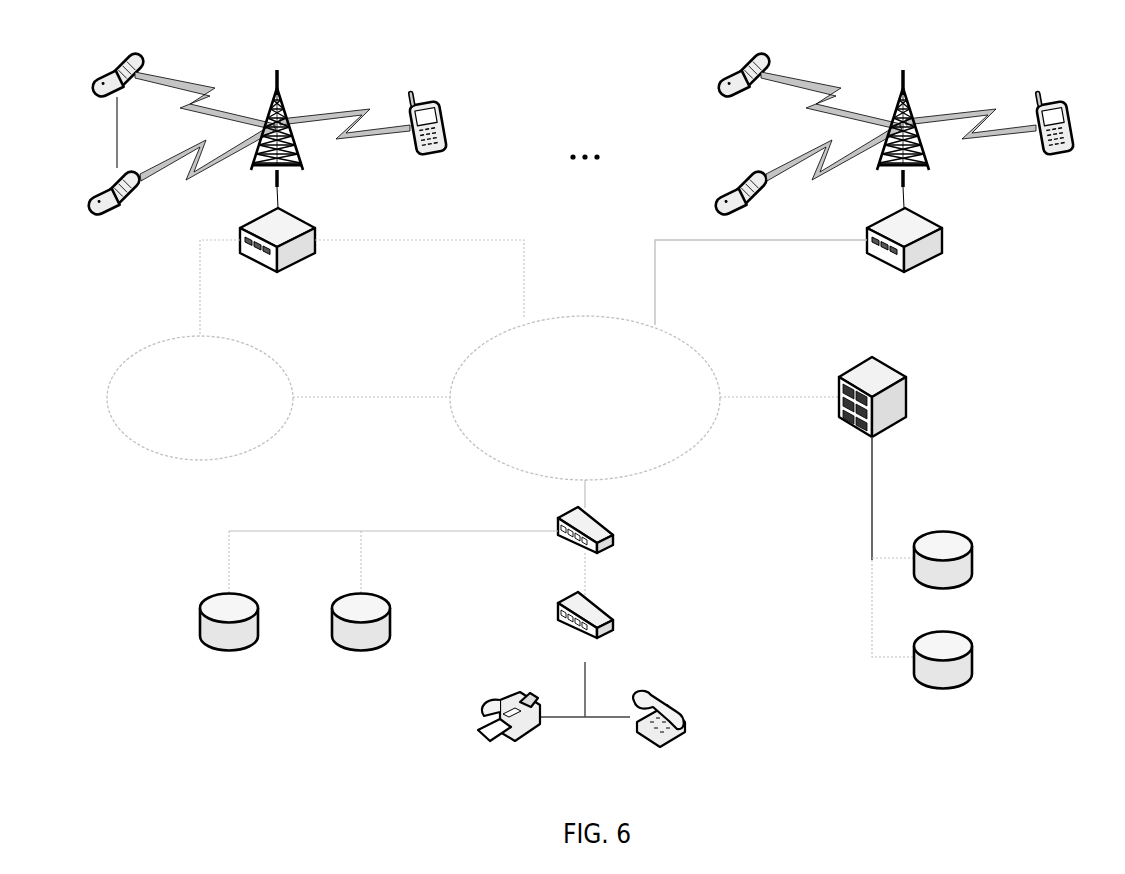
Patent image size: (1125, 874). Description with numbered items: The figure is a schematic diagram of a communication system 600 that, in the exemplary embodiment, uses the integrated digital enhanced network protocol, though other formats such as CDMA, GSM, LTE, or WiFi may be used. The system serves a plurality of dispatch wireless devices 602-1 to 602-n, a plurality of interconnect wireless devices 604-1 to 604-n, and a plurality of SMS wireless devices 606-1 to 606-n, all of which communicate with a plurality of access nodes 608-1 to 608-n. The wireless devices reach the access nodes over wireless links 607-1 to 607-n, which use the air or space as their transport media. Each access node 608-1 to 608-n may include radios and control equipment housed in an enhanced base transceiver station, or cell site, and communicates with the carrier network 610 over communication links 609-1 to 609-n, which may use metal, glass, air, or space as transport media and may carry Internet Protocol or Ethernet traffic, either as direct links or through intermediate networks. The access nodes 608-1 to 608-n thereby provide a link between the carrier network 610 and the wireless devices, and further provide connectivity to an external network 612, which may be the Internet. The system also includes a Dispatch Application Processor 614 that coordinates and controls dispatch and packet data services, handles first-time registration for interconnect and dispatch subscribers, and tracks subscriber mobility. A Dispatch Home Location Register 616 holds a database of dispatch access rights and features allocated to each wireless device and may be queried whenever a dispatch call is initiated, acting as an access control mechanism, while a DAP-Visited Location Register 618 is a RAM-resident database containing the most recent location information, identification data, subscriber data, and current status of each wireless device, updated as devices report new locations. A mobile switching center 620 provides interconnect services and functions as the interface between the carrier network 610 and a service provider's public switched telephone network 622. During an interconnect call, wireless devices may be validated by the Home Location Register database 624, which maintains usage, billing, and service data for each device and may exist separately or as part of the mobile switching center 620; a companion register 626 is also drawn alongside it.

The communication system 600 is at (584, 89).
The dispatch wireless device 602-1 is at (100, 73).
The interconnect wireless device 604-1 is at (95, 193).
The SMS wireless device 606-1 is at (450, 105).
The wireless link 607-1 is at (368, 118).
The access node 608-1 is at (240, 237).
The communication link 609-1 is at (443, 240).
The dispatch wireless device 602-n is at (725, 73).
The interconnect wireless device 604-n is at (723, 193).
The SMS wireless device 606-n is at (1073, 103).
The wireless link 607-n is at (994, 118).
The access node 608-n is at (867, 237).
The communication link 609-n is at (757, 240).
The carrier network 610 is at (705, 357).
The external network 612 is at (133, 353).
The Dispatch Application Processor 614 is at (912, 398).
The Dispatch Home Location Register 616 is at (914, 555).
The DAP-Visited Location Register 618 is at (914, 655).
The mobile switching center 620 is at (615, 528).
The public switched telephone network 622 is at (615, 612).
The Home Location Register 624 is at (202, 606).
The visitor location register (VLR) 626 is at (334, 606).